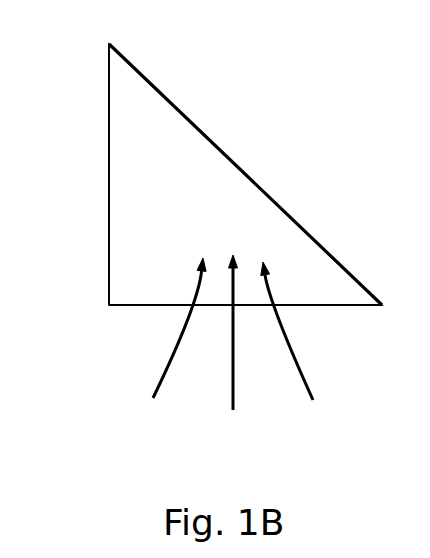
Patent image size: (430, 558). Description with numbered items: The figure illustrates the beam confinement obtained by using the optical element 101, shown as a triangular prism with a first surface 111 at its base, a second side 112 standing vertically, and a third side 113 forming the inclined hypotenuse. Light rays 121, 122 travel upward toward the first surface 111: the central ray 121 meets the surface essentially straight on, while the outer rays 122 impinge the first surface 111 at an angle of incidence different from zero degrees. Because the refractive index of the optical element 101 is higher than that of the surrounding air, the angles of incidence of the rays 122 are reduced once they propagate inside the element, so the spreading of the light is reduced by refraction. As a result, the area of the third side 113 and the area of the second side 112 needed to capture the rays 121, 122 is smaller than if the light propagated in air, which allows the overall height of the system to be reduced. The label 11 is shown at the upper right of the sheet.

The optical element 11 is at (412, 90).
The optical element 101 is at (133, 90).
The first surface 111 is at (370, 307).
The second side 112 is at (107, 72).
The third side 113 is at (352, 259).
The light ray 121 is at (240, 393).
The rays 122 is at (168, 357).